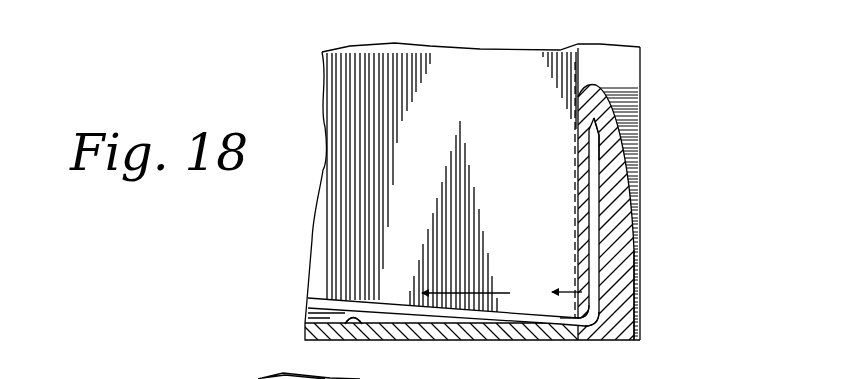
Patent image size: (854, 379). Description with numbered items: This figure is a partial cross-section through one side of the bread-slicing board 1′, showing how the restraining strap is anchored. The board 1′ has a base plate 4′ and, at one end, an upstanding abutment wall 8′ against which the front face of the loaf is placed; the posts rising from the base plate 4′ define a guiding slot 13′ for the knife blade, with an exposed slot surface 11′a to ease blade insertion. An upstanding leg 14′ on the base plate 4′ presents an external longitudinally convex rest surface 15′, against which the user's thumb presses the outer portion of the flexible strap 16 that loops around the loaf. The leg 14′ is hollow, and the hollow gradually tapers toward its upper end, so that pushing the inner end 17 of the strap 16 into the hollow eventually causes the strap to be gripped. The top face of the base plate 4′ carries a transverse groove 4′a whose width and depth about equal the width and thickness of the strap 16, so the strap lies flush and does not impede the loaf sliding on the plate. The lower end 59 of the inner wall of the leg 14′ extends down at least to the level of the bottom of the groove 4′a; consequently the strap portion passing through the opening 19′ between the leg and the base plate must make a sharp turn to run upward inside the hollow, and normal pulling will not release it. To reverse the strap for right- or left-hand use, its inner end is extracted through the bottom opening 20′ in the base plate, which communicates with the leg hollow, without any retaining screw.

The board 1′ is at (304, 249).
The base plate 4′ is at (467, 327).
The transverse groove 4′a is at (355, 326).
The abutment wall 8′ is at (485, 60).
The exposed slot surface 11′a is at (174, 373).
The guiding slot 13′ is at (258, 378).
The upstanding leg 14′ is at (579, 129).
The rest surface 15′ is at (620, 168).
The flexible strap 16 is at (312, 304).
The inner end of the strap 17 is at (598, 150).
The opening 19′ is at (577, 327).
The bottom opening 20′ is at (600, 333).
The lower end of the inner wall 59 is at (590, 322).